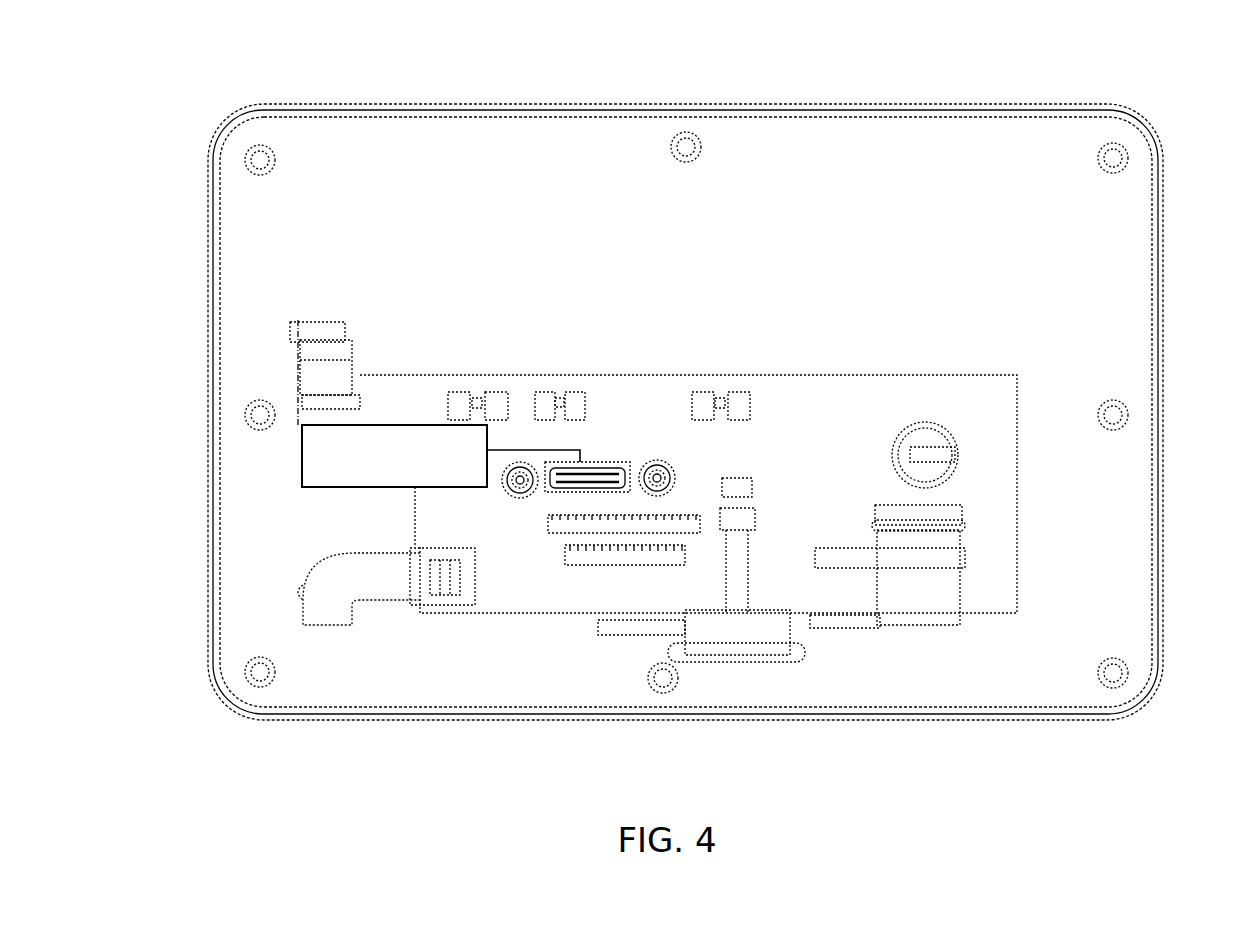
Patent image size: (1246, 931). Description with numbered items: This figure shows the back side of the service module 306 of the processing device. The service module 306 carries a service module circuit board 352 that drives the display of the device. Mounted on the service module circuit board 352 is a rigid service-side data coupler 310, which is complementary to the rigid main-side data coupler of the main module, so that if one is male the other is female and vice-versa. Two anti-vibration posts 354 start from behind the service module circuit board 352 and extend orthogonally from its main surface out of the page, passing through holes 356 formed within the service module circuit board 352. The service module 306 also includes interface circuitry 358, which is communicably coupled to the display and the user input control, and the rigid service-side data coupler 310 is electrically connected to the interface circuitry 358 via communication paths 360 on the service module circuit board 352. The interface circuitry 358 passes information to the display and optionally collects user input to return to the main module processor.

The service module 306 is at (266, 88).
The service module circuit board 352 is at (1013, 551).
The anti-vibration posts 354 is at (657, 478).
The holes 356 is at (660, 462).
The interface circuitry 358 is at (302, 444).
The communication paths 360 is at (562, 450).
The rigid service-side data coupler 310 is at (585, 495).